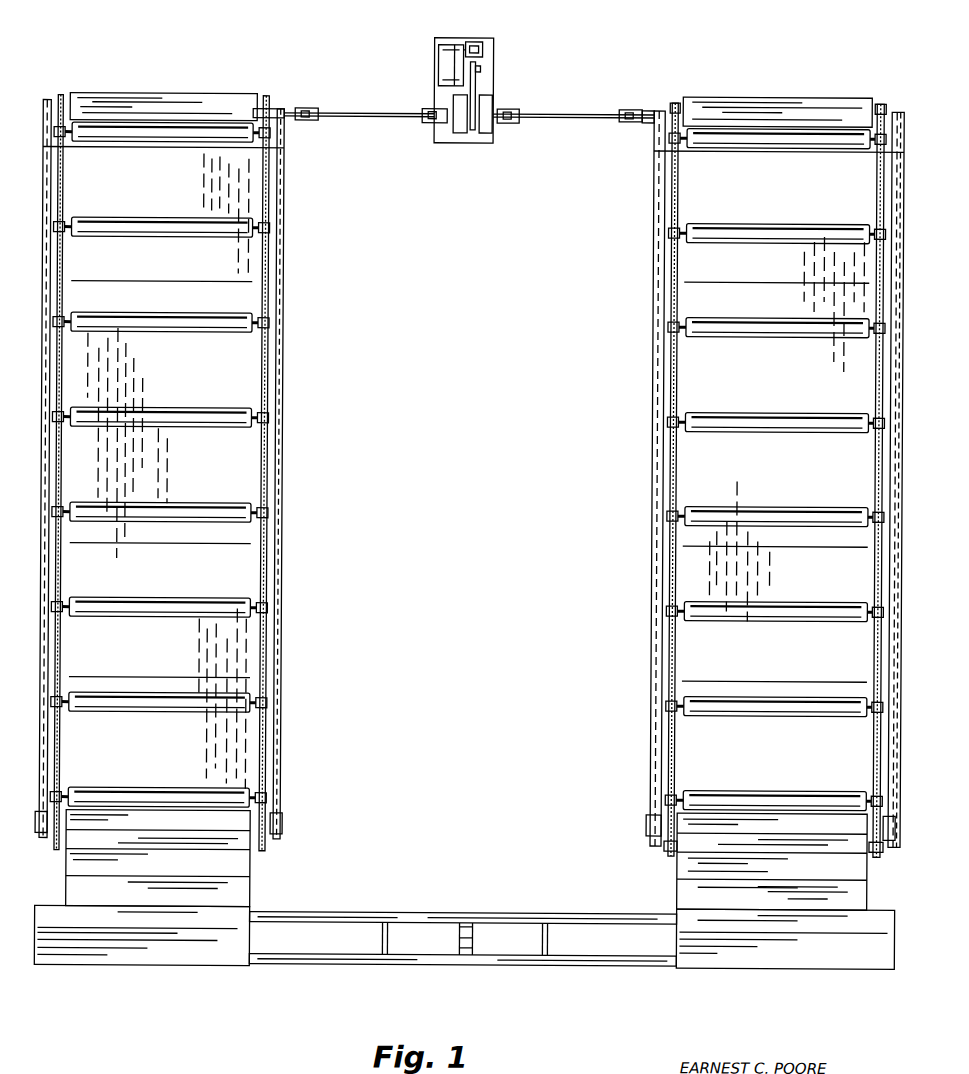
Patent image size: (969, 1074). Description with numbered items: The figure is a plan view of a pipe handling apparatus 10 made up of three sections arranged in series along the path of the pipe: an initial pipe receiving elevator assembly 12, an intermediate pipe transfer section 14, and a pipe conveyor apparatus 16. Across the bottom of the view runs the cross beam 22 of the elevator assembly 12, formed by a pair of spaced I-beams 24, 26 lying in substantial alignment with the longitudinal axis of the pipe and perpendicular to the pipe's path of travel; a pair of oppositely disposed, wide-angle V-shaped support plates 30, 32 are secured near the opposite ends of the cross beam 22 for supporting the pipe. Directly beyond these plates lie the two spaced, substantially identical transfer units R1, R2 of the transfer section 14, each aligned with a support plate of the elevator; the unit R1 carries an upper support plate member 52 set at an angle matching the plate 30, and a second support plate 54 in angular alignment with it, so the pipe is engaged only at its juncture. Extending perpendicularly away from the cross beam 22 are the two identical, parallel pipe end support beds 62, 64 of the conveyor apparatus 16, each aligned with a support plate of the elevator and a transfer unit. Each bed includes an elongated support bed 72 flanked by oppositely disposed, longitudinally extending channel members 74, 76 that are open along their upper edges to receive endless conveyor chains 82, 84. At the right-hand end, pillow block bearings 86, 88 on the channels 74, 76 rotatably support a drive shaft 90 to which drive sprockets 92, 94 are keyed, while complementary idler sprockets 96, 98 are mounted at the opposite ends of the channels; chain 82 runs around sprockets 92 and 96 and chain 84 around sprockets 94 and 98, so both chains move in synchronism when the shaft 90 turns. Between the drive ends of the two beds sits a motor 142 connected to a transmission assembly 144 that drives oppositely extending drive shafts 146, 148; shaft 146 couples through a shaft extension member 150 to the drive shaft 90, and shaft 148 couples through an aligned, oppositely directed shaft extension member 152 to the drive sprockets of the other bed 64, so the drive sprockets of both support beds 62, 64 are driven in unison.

The pipe handling apparatus 10 is at (447, 960).
The pipe receiving elevator assembly 12 is at (463, 943).
The intermediate pipe transfer section 14 is at (724, 865).
The pipe conveyor apparatus 16 is at (748, 459).
The cross beam 22 is at (318, 908).
The I-beam 24 is at (397, 918).
The I-beam 26 is at (480, 957).
The support plate 30 is at (806, 952).
The support plate 32 is at (165, 957).
The upper support plate member 52 is at (855, 896).
The second support plate 54 is at (852, 865).
The pipe end support bed 62 is at (655, 403).
The pipe end support bed 64 is at (283, 442).
The elongated support bed 72 is at (699, 736).
The channel member 74 is at (883, 641).
The channel member 76 is at (667, 470).
The conveyor chain 82 is at (877, 382).
The conveyor chain 84 is at (676, 279).
The pillow block bearing 86 is at (895, 108).
The pillow block bearing 88 is at (655, 112).
The drive shaft 90 is at (646, 121).
The drive sprocket 92 is at (883, 108).
The drive sprocket 94 is at (670, 108).
The idler sprocket 96 is at (875, 846).
The idler sprocket 98 is at (672, 850).
The motor 142 is at (476, 42).
The transmission assembly 144 is at (444, 68).
The drive shaft 146 is at (491, 123).
The drive shaft 148 is at (450, 115).
The shaft extension member 150 is at (576, 119).
The shaft extension member 152 is at (347, 119).
The transfer unit R1 is at (687, 892).
The transfer unit R2 is at (241, 871).